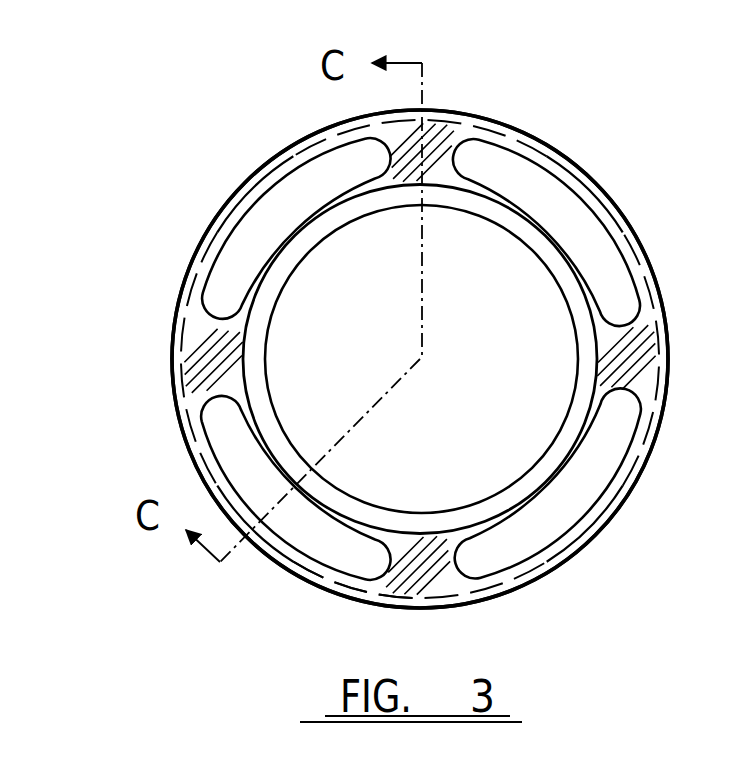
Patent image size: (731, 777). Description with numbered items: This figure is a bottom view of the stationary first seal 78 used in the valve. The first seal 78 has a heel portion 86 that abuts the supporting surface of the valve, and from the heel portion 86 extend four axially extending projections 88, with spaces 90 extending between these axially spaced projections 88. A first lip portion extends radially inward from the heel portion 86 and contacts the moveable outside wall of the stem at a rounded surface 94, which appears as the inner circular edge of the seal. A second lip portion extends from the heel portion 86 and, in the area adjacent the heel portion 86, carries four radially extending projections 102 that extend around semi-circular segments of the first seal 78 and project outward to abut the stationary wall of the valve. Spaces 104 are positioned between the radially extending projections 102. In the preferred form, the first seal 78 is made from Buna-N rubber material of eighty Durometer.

The first seal 78 is at (602, 603).
The heel portion 86 is at (360, 597).
The axially extending projections 88 is at (505, 542).
The spaces 90 is at (203, 365).
The rounded surface 94 is at (282, 293).
The radially extending projections 102 is at (518, 127).
The spaces 104 is at (245, 193).